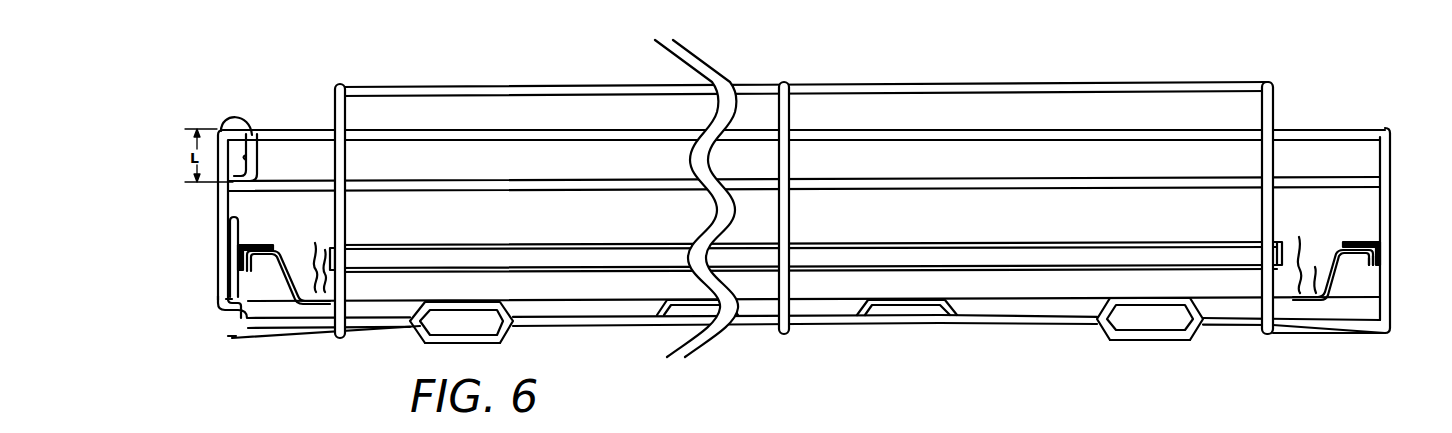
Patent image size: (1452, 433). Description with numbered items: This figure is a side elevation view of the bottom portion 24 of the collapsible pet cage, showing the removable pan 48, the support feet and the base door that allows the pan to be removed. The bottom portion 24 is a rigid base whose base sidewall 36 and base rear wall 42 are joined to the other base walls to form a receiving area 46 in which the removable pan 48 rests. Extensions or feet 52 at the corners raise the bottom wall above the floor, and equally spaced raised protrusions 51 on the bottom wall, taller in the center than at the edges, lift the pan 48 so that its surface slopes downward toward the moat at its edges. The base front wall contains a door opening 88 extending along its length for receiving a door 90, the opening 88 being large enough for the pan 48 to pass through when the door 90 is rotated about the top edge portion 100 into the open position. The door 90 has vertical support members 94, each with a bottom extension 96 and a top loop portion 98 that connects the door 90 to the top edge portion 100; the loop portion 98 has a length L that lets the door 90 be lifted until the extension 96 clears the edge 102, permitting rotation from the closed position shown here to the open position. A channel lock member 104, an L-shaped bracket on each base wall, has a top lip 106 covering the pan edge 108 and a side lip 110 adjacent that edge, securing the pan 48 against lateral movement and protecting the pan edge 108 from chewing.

The bottom portion 24 is at (1395, 216).
The base sidewall 36 is at (852, 88).
The base rear wall 42 is at (224, 309).
The receiving area 46 is at (452, 241).
The removable pan 48 is at (1023, 283).
The raised protrusions 51 is at (490, 300).
The extensions or feet 52 is at (485, 338).
The door opening 88 is at (335, 110).
The door 90 is at (217, 212).
The vertical support members 94 is at (217, 238).
The bottom extension 96 is at (247, 340).
The top loop portion 98 is at (243, 157).
The top edge portion 100 is at (233, 131).
The edge 102 is at (227, 336).
The channel lock member 104 is at (251, 236).
The top lip 106 is at (262, 246).
The pan edge 108 is at (226, 299).
The side lip 110 is at (240, 260).